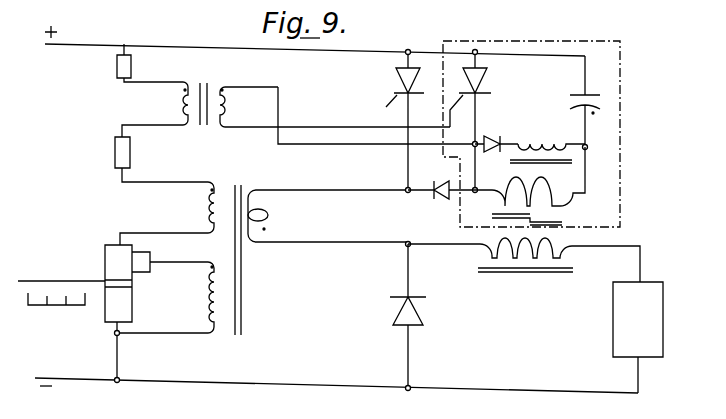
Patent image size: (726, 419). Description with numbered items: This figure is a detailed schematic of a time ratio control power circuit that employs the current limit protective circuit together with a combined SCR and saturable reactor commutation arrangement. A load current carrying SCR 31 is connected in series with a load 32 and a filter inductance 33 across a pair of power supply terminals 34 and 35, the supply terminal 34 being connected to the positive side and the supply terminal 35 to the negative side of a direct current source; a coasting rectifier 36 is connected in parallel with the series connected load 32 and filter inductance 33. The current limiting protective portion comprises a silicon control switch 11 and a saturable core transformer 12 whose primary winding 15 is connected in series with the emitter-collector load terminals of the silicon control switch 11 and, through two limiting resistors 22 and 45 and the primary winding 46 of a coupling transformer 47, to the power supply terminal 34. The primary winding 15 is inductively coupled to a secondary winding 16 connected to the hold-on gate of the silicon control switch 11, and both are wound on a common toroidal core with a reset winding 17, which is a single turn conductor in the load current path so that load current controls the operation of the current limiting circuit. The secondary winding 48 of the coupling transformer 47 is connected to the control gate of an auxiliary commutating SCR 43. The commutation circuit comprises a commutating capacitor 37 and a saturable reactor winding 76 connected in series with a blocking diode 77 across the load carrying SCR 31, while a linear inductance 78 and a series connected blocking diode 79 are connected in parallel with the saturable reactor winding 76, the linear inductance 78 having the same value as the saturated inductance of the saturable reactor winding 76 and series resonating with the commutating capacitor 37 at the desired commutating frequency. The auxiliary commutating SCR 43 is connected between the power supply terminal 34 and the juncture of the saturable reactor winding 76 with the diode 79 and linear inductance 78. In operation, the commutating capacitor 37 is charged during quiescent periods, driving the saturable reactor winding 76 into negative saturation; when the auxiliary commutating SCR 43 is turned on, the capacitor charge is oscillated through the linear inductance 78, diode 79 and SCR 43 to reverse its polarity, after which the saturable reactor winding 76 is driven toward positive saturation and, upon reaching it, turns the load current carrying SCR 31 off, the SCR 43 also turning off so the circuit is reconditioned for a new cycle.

The silicon control switch 11 is at (139, 302).
The saturable core transformer 12 is at (267, 297).
The primary winding 15 is at (208, 210).
The secondary winding 16 is at (207, 314).
The reset winding 17 is at (270, 213).
The limiting resistor 22 is at (130, 151).
The load current carrying SCR 31 is at (396, 78).
The load 32 is at (663, 313).
The filter inductance 33 is at (560, 249).
The power supply terminal 34 is at (88, 37).
The power supply terminal 35 is at (162, 383).
The coasting rectifier 36 is at (413, 308).
The commutating capacitor 37 is at (592, 92).
The auxiliary commutating SCR 43 is at (483, 82).
The limiting resistor 45 is at (117, 70).
The primary winding 46 is at (182, 103).
The coupling transformer 47 is at (213, 153).
The secondary winding 48 is at (227, 106).
The saturable reactor winding 76 is at (541, 189).
The blocking diode 77 is at (438, 200).
The linear inductance 78 is at (538, 139).
The blocking diode 79 is at (485, 138).